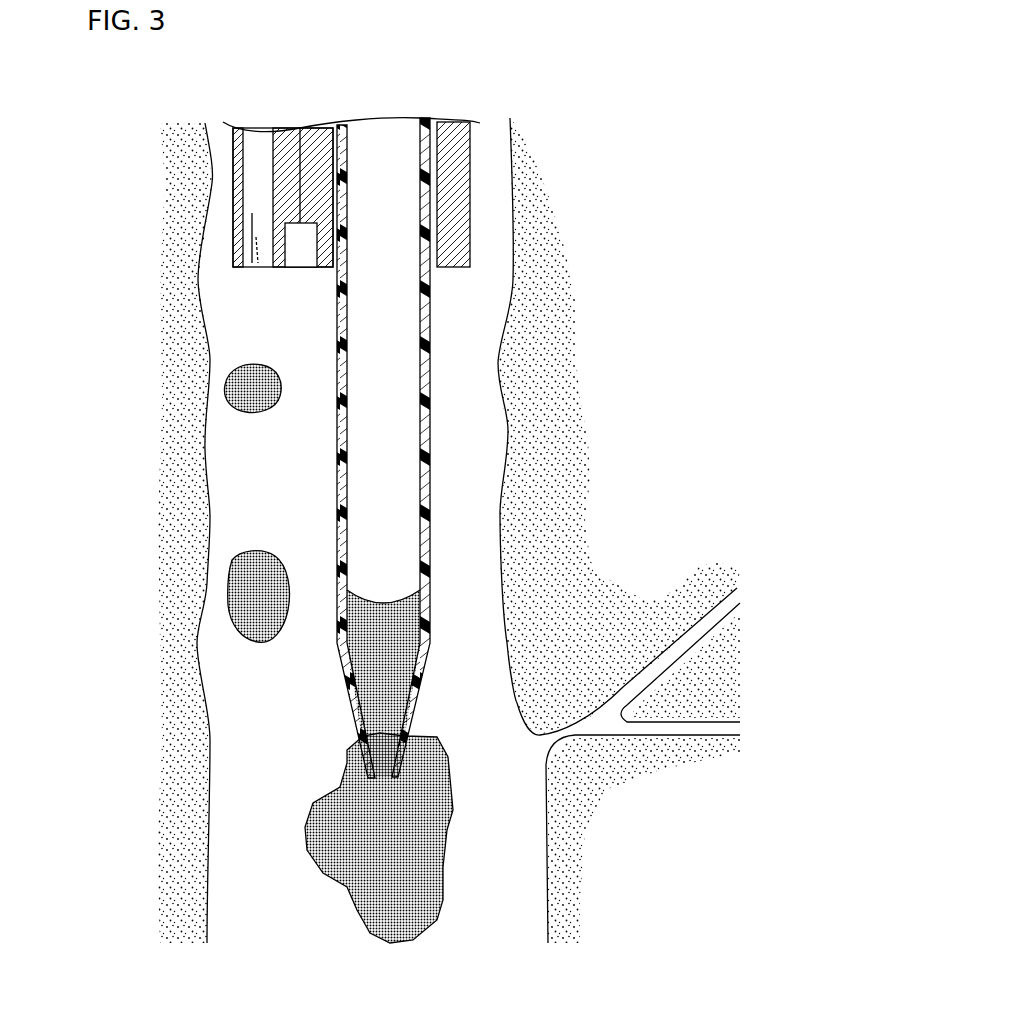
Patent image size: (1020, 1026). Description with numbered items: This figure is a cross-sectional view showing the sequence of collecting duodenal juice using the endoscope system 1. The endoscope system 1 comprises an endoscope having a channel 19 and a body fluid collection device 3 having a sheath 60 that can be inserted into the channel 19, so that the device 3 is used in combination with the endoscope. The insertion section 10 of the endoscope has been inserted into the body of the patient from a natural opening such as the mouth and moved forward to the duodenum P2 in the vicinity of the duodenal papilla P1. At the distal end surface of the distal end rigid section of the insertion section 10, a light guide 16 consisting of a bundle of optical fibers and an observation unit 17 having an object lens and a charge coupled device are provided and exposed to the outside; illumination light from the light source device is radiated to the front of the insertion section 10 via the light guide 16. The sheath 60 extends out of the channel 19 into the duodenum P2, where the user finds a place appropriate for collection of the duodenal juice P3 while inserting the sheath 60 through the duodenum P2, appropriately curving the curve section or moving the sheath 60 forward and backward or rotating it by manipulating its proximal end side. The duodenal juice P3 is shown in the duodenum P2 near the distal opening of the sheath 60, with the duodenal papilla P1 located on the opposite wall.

The endoscope system 1 is at (429, 413).
The insertion section 10 is at (429, 235).
The body fluid collection device 3 is at (429, 235).
The light guide 16 is at (267, 260).
The observation unit 17 is at (307, 257).
The channel 19 is at (430, 242).
The sheath 60 is at (337, 467).
The duodenal papilla P1 is at (568, 767).
The duodenum P2 is at (251, 461).
The duodenal juice P3 is at (360, 663).